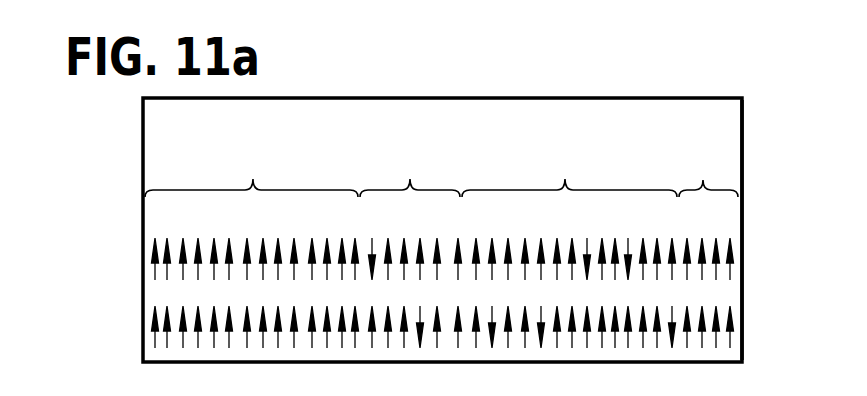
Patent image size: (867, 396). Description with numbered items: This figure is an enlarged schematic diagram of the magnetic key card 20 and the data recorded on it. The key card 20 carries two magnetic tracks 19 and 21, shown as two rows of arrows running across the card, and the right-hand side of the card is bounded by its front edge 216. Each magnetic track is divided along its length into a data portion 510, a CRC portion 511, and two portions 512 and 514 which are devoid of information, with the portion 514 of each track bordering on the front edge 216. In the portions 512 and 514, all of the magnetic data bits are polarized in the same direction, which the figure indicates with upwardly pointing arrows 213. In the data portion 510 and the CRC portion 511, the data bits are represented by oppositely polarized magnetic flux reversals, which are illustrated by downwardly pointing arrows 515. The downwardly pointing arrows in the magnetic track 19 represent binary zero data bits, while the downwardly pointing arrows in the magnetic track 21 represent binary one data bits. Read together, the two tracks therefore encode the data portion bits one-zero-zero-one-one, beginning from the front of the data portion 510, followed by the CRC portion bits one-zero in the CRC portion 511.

The key card 20 is at (566, 92).
The front edge 216 is at (771, 230).
The portion devoid of information 512 is at (251, 177).
The CRC portion 511 is at (410, 177).
The data portion 510 is at (569, 175).
The portion devoid of information 514 is at (708, 177).
The downwardly pointing arrow 515 is at (522, 272).
The upwardly pointing arrow 213 is at (162, 280).
The magnetic track 19 is at (733, 246).
The magnetic track 21 is at (708, 324).